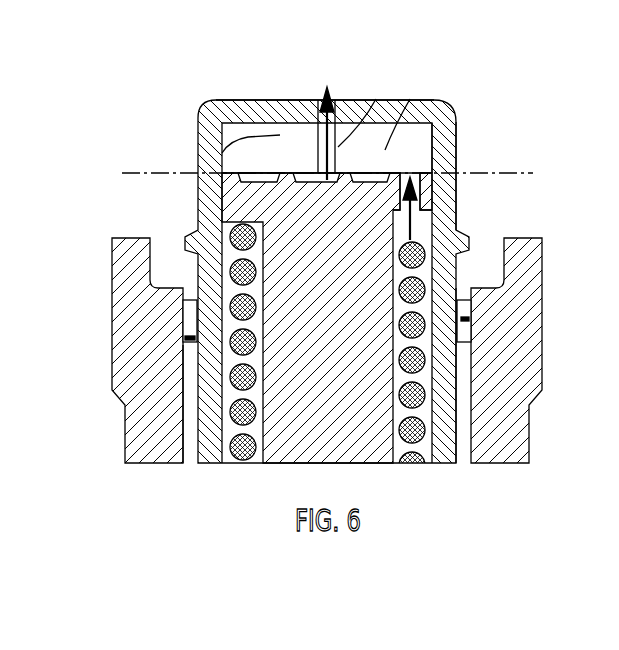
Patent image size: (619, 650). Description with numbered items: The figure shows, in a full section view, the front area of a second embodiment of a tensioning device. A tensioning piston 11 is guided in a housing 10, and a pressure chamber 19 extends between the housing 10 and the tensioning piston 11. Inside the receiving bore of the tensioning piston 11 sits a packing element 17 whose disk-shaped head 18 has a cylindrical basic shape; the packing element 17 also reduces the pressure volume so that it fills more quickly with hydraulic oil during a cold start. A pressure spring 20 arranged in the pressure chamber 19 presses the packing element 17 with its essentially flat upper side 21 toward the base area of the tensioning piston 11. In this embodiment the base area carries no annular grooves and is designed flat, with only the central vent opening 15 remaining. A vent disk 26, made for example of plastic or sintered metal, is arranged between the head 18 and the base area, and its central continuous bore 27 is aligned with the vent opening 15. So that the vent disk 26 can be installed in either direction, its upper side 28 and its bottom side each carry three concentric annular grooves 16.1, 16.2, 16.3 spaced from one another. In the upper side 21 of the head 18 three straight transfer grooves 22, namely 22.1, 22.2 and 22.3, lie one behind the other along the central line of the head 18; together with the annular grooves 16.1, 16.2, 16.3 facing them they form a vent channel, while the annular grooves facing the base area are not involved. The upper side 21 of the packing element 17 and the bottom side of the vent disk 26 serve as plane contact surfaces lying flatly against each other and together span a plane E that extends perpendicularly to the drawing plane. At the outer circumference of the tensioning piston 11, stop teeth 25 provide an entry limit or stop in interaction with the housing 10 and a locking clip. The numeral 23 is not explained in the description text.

The housing 10 is at (535, 420).
The tensioning piston 11 is at (472, 345).
The vent opening 15 is at (338, 97).
The annular groove 16.1 is at (238, 100).
The annular groove 16.2 is at (278, 100).
The annular groove 16.3 is at (312, 99).
The packing element 17 is at (456, 315).
The head 18 is at (446, 192).
The pressure chamber 19 is at (190, 425).
The pressure spring 20 is at (425, 428).
The upper side 21 is at (445, 165).
The transfer grooves 22 is at (240, 179).
The transfer groove 22.1 is at (240, 181).
The transfer groove 22.2 is at (424, 214).
The transfer groove 22.3 is at (236, 172).
The cavity bottom 23 is at (436, 176).
The stop teeth 25 is at (190, 338).
The vent disk 26 is at (434, 150).
The continuous bore 27 is at (376, 99).
The upper side 28 is at (410, 99).
The plane E is at (512, 173).